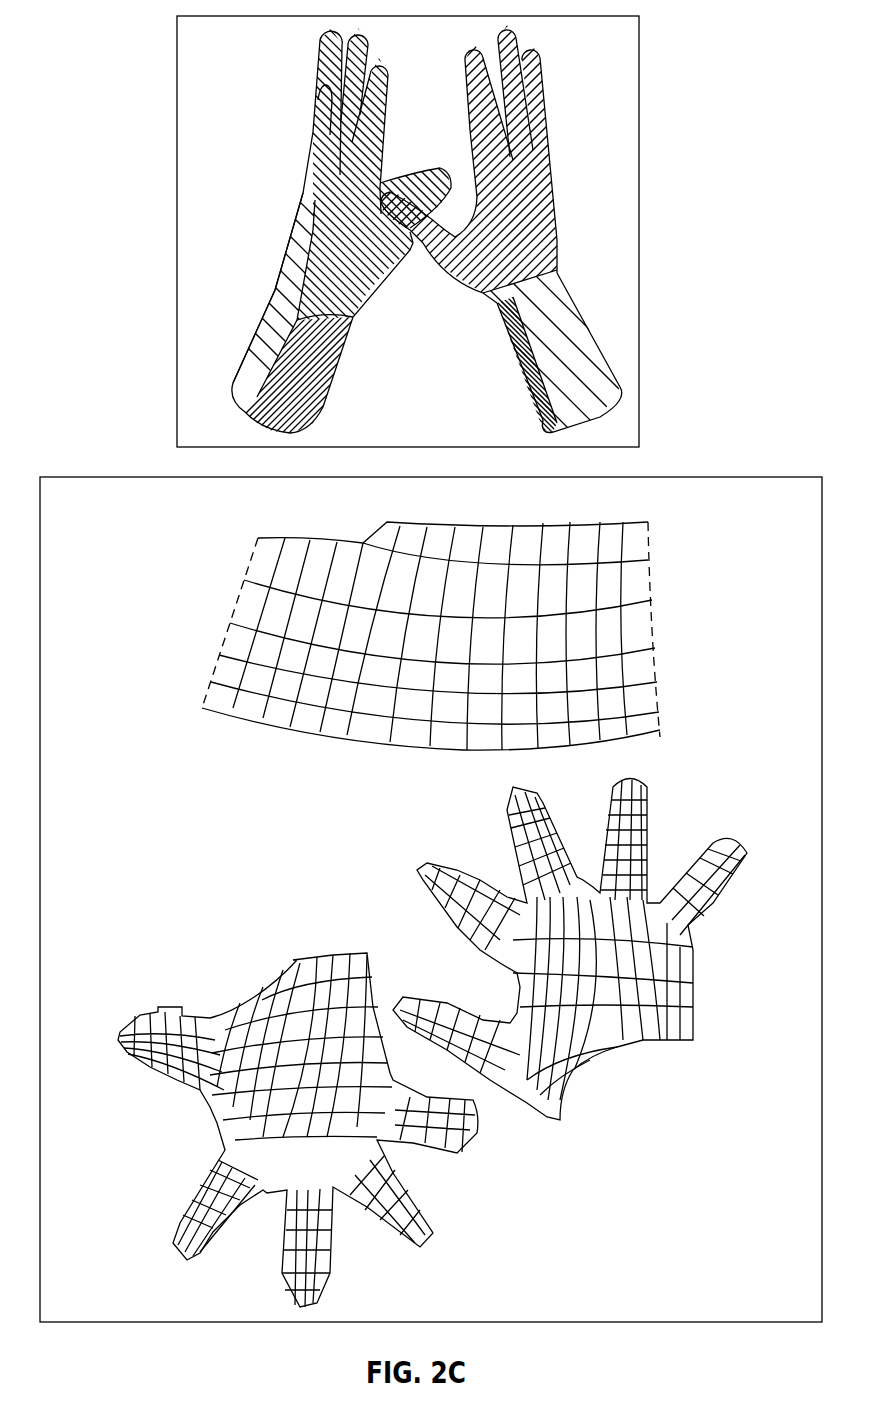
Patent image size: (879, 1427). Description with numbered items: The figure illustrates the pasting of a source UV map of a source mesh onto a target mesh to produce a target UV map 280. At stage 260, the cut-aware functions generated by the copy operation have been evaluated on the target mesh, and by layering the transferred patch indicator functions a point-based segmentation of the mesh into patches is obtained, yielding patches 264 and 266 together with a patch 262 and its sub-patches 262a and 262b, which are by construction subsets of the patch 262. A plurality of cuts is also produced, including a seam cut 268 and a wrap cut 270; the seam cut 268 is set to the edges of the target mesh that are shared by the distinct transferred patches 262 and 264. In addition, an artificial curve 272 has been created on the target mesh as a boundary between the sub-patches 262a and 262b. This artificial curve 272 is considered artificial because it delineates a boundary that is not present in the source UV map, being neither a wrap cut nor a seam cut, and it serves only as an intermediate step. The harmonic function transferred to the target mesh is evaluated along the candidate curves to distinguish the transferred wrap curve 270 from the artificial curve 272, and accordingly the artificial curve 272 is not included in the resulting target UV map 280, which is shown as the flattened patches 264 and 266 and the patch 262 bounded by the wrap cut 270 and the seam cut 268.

The stage 260 is at (176, 208).
The patch 262 is at (303, 625).
The sub-patch 262a is at (277, 310).
The sub-patch 262b is at (306, 394).
The patch 264 is at (362, 162).
The patch 266 is at (302, 200).
The seam cut 268 is at (350, 312).
The wrap cut 270 is at (268, 355).
The artificial curve 272 is at (512, 340).
The target UV map 280 is at (88, 476).